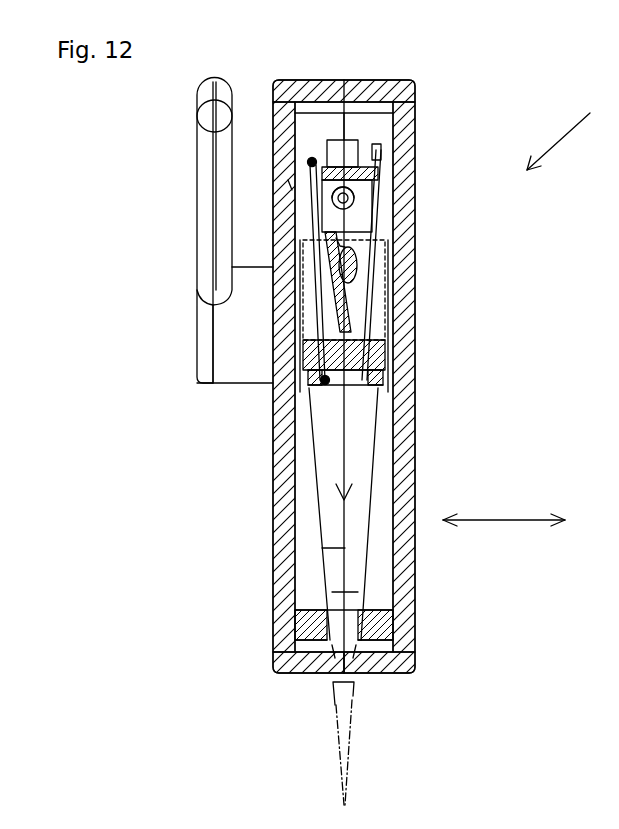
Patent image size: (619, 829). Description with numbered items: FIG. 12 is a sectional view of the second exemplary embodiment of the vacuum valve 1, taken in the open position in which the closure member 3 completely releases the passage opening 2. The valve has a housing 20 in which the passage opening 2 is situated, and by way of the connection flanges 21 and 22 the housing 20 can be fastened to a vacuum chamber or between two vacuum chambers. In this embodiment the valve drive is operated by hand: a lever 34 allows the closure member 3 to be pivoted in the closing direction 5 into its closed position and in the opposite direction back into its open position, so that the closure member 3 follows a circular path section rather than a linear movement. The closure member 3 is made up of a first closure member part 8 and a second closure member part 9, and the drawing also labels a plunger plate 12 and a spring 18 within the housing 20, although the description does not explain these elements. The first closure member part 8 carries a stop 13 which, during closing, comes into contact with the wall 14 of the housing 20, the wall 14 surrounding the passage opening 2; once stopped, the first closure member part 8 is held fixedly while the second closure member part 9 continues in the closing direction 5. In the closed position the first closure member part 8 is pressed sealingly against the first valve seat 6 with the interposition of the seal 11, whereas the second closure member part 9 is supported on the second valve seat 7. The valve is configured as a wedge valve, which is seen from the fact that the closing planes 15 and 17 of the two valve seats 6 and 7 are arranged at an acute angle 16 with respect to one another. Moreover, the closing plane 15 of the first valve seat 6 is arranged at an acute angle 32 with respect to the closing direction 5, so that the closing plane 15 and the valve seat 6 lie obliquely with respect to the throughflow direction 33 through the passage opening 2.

The vacuum valve 1 is at (565, 128).
The passage opening 2 is at (380, 500).
The closure member 3 is at (378, 288).
The closing direction 5 is at (340, 445).
The first valve seat 6 is at (312, 385).
The second valve seat 7 is at (345, 390).
The first closure member part 8 is at (312, 290).
The second closure member part 9 is at (372, 226).
The seal 11 is at (311, 160).
The plunger plate 12 is at (380, 153).
The stop 13 is at (330, 258).
The wall 14 is at (298, 608).
The closing plane 15 is at (290, 186).
The acute angle 16 is at (345, 690).
The closing plane 17 is at (386, 340).
The spring 18 is at (357, 260).
The housing 20 is at (408, 100).
The connection flange 21 is at (275, 640).
The connection flange 22 is at (405, 655).
The acute angle 32 is at (330, 565).
The throughflow direction 33 is at (505, 518).
The lever 34 is at (213, 180).